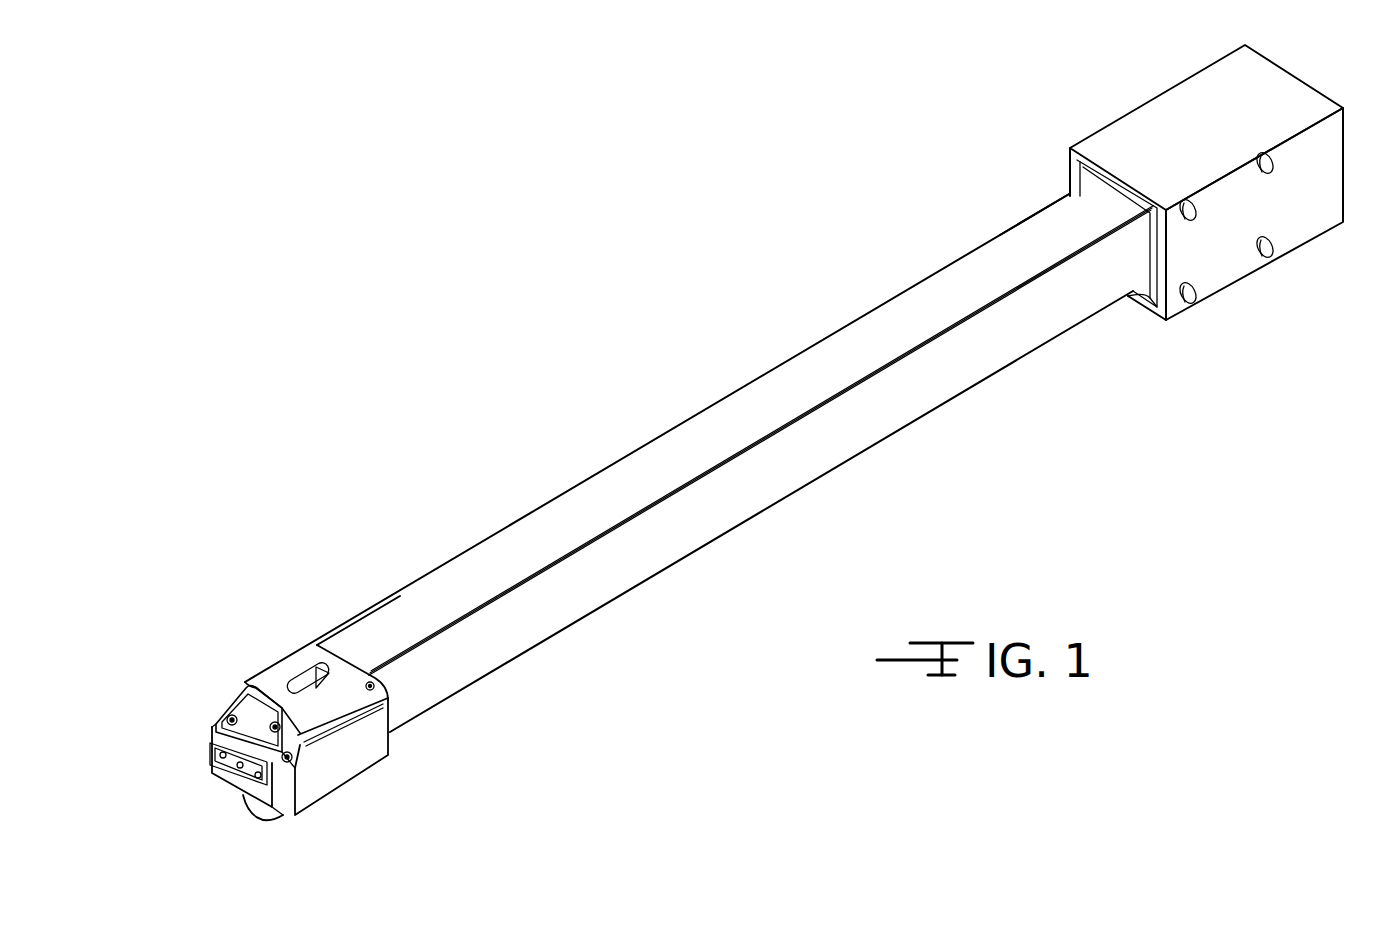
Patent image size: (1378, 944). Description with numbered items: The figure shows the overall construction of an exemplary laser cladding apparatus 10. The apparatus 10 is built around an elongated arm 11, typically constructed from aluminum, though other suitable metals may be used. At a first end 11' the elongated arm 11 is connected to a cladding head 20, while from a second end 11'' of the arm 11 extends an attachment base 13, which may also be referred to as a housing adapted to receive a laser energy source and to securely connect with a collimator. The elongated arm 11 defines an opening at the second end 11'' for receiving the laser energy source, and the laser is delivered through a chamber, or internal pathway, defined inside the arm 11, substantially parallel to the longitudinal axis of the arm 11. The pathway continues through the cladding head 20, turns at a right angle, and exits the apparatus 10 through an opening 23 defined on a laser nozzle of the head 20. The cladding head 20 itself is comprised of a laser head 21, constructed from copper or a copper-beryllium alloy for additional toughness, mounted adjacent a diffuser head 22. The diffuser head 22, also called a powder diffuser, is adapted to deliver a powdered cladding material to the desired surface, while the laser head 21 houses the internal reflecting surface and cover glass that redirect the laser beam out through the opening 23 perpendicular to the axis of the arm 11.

The cladding apparatus 10 is at (800, 206).
The elongated arm 11 is at (699, 445).
The first end 11' is at (351, 597).
The second end 11'' is at (1013, 196).
The attachment base 13 is at (1145, 152).
The cladding head 20 is at (242, 646).
The laser head 21 is at (270, 693).
The diffuser head 22 is at (335, 777).
The opening 23 is at (256, 832).